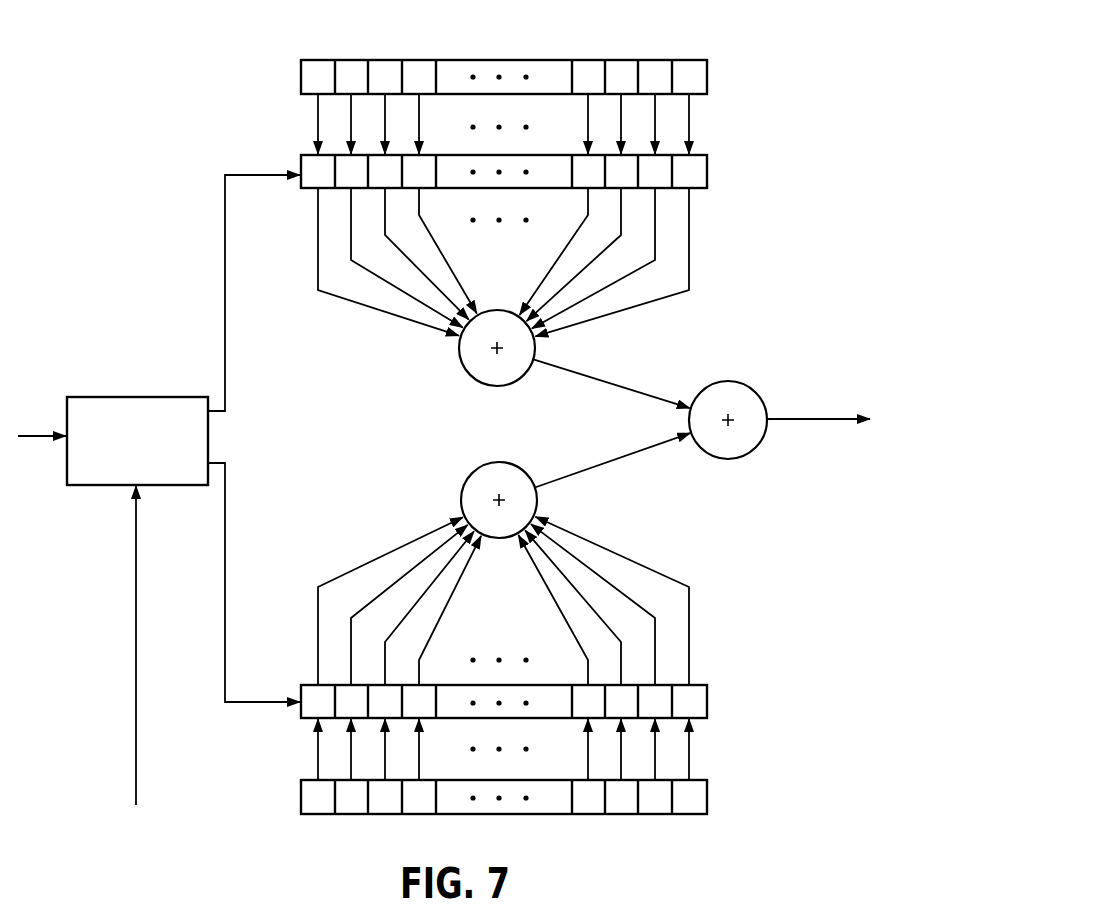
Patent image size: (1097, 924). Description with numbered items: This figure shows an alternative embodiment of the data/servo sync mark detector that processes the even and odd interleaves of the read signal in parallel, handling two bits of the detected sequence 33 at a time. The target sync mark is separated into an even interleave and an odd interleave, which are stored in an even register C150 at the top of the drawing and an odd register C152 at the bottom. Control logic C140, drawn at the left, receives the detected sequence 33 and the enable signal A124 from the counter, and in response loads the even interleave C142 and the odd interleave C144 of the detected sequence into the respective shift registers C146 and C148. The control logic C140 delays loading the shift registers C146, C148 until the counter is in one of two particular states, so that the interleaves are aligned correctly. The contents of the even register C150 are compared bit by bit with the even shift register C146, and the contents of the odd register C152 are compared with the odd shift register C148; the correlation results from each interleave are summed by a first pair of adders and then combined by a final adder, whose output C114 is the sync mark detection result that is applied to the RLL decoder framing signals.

The even register C150 is at (518, 60).
The even shift register C146 is at (707, 173).
The even interleave C142 is at (225, 283).
The control logic C140 is at (154, 397).
The detected sequence 33 is at (47, 437).
The enable signal A124 is at (136, 727).
The odd interleave C144 is at (226, 528).
The odd shift register C148 is at (707, 700).
The odd register C152 is at (537, 815).
The output C114 is at (837, 418).